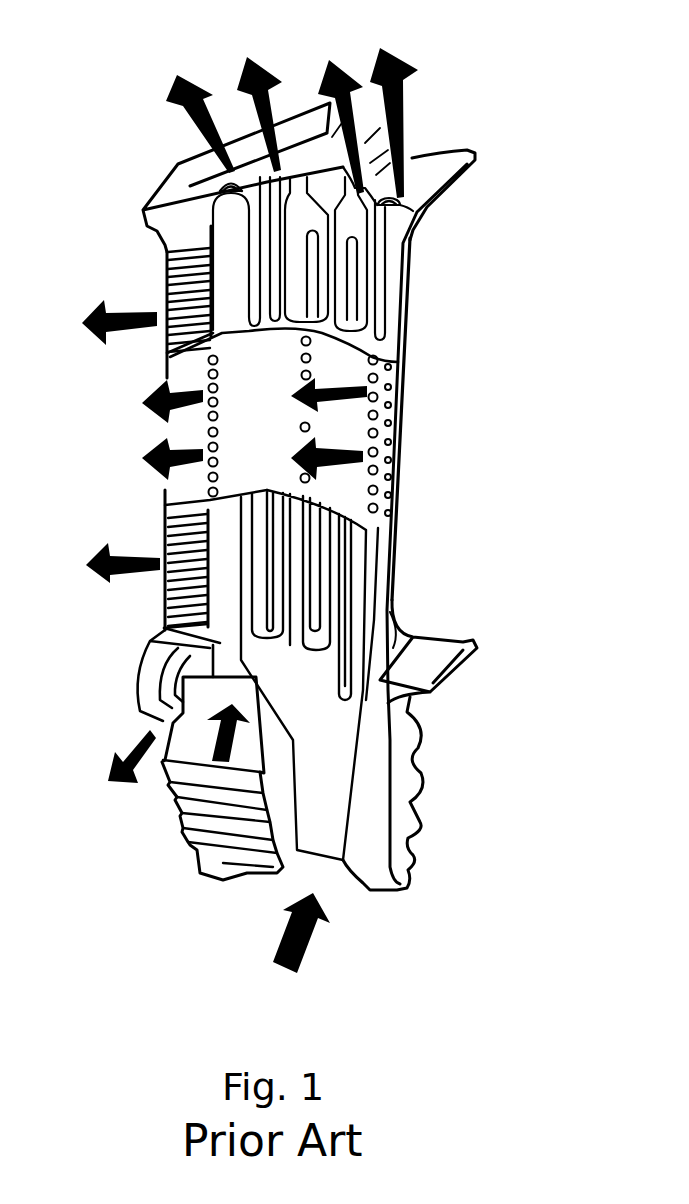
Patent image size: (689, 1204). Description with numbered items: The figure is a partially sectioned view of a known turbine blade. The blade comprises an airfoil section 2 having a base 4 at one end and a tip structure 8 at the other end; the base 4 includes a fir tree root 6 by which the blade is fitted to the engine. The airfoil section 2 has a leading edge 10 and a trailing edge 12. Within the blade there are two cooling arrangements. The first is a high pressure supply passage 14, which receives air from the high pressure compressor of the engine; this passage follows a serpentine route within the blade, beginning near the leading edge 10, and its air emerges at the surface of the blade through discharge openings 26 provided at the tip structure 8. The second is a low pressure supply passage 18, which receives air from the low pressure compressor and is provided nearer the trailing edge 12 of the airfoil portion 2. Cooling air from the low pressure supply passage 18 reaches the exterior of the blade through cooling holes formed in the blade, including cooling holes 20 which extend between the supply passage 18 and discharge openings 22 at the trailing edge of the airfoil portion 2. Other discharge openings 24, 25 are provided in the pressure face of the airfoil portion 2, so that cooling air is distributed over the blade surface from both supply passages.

The airfoil section 2 is at (458, 522).
The base 4 is at (462, 670).
The fir tree root 6 is at (418, 768).
The tip structure 8 is at (176, 172).
The leading edge 10 is at (403, 372).
The trailing edge 12 is at (165, 502).
The high pressure supply passage 14 is at (393, 580).
The low pressure supply passage 18 is at (153, 667).
The cooling holes 20 is at (167, 347).
The discharge openings 22 is at (167, 281).
The discharge openings 24 is at (216, 432).
The discharge openings 25 is at (384, 461).
The discharge openings 26 is at (307, 177).